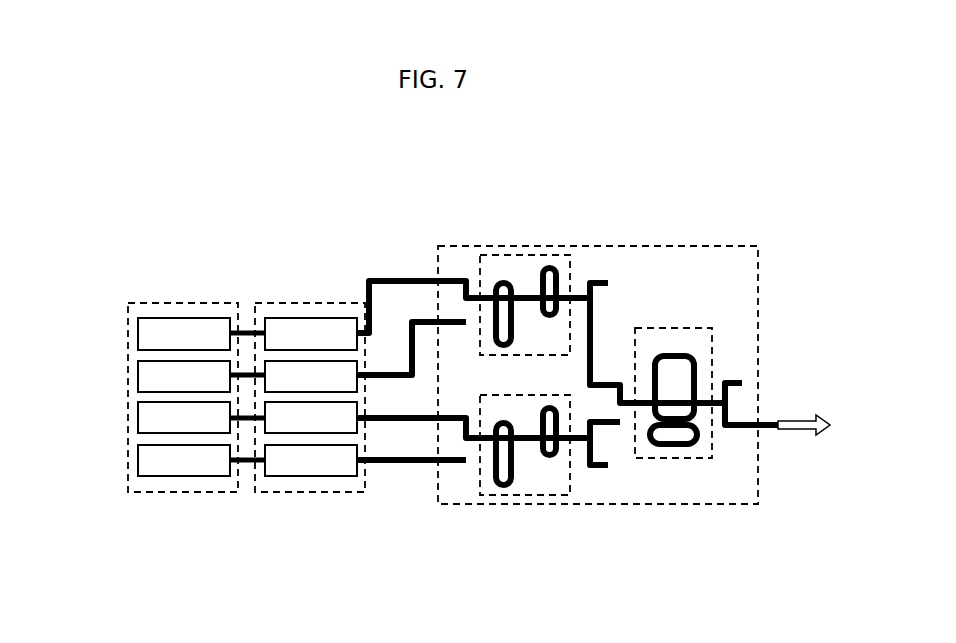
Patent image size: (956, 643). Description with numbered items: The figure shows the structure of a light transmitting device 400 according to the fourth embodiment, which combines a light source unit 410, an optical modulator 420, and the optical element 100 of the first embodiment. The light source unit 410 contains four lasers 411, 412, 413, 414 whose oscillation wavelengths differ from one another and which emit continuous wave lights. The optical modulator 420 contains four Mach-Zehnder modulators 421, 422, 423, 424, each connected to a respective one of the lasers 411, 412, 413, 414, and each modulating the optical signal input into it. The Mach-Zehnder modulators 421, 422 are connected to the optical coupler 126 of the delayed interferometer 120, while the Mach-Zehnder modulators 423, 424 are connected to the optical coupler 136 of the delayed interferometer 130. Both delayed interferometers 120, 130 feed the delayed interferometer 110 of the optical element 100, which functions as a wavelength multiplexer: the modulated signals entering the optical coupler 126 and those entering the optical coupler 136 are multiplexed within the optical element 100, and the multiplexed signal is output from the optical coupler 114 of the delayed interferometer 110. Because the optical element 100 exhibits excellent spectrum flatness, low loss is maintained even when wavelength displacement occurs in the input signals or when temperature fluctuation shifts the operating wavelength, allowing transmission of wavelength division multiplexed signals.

The light transmitting device 400 is at (637, 214).
The optical element 100 is at (675, 505).
The delayed interferometer 110 is at (690, 328).
The optical coupler 114 is at (703, 404).
The delayed interferometer 120 is at (542, 255).
The optical coupler 126 is at (489, 296).
The delayed interferometer 130 is at (542, 495).
The optical coupler 136 is at (487, 442).
The light source unit 410 is at (155, 303).
The laser 411 is at (187, 318).
The laser 412 is at (138, 376).
The laser 413 is at (138, 418).
The laser 414 is at (138, 460).
The optical modulator 420 is at (292, 303).
The Mach-Zehnder modulator 421 is at (328, 318).
The Mach-Zehnder modulator 422 is at (362, 384).
The Mach-Zehnder modulator 423 is at (285, 435).
The Mach-Zehnder modulator 424 is at (325, 478).